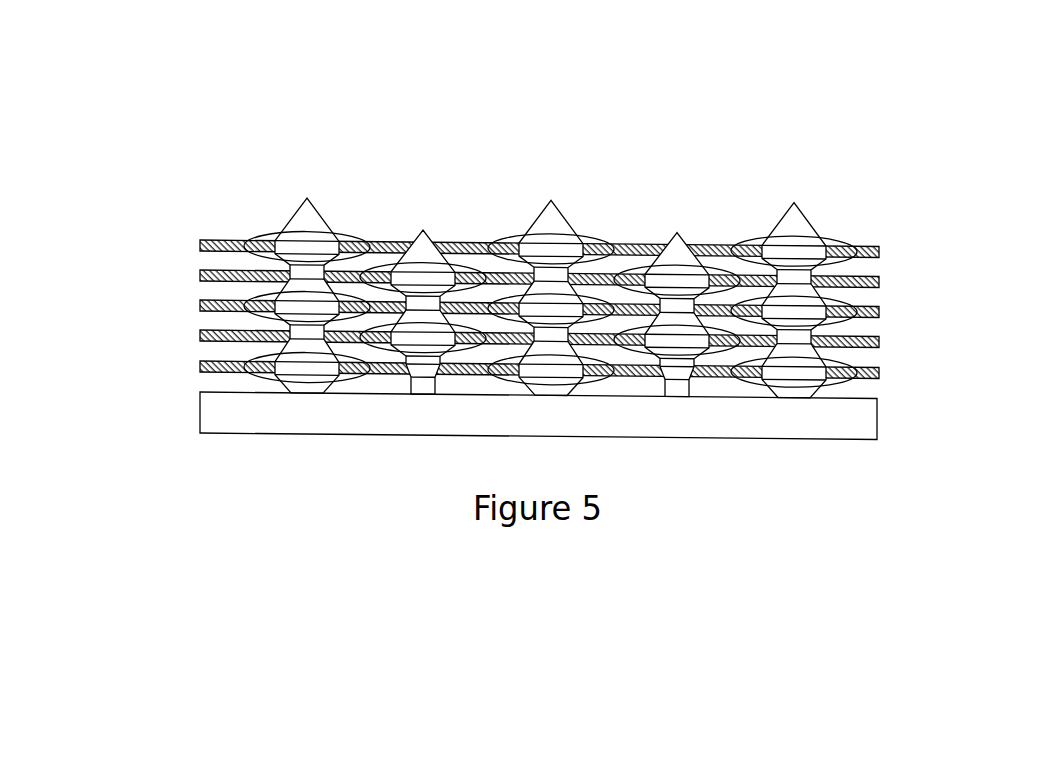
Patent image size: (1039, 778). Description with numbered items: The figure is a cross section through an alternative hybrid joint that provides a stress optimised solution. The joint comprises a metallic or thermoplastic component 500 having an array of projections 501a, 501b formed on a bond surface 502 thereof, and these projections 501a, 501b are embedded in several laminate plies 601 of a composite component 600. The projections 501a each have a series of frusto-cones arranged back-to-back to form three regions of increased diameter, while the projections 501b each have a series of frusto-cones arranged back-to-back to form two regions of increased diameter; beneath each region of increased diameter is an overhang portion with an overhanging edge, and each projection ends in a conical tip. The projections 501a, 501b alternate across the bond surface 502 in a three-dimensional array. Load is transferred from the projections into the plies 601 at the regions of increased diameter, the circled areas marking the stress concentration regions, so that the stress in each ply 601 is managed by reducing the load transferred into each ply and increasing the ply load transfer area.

The metallic or thermoplastic component 500 is at (538, 272).
The bond surface 502 is at (270, 420).
The composite component 600 is at (538, 228).
The laminate plies 601 is at (200, 363).
The projections having a first projection profile 501a is at (310, 218).
The projections having a second projection profile 501b is at (432, 238).